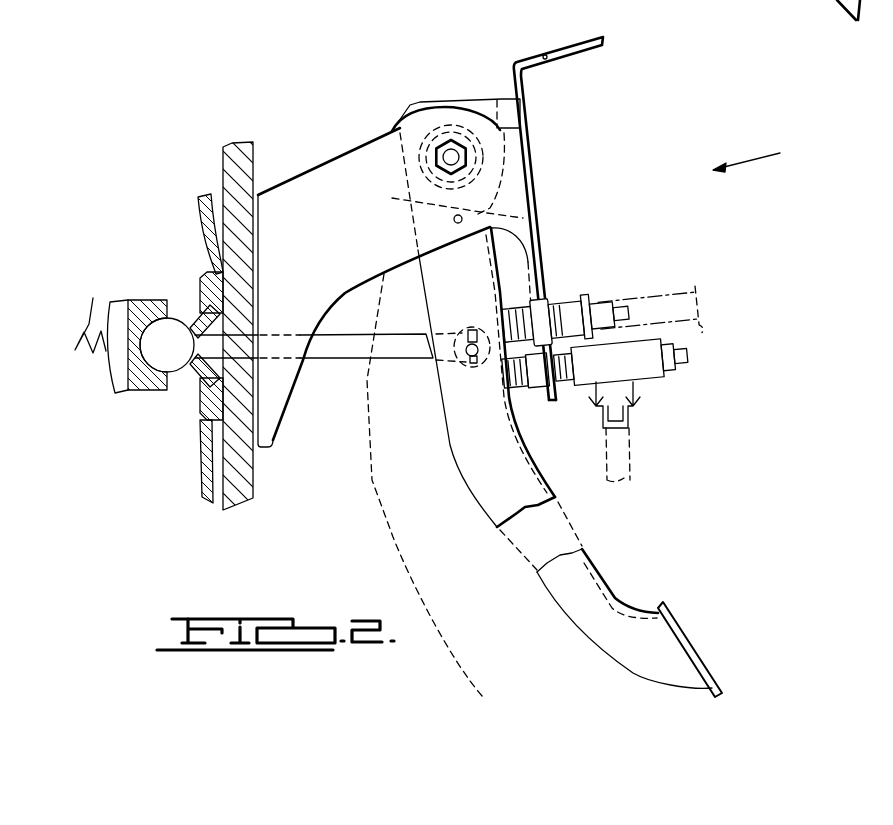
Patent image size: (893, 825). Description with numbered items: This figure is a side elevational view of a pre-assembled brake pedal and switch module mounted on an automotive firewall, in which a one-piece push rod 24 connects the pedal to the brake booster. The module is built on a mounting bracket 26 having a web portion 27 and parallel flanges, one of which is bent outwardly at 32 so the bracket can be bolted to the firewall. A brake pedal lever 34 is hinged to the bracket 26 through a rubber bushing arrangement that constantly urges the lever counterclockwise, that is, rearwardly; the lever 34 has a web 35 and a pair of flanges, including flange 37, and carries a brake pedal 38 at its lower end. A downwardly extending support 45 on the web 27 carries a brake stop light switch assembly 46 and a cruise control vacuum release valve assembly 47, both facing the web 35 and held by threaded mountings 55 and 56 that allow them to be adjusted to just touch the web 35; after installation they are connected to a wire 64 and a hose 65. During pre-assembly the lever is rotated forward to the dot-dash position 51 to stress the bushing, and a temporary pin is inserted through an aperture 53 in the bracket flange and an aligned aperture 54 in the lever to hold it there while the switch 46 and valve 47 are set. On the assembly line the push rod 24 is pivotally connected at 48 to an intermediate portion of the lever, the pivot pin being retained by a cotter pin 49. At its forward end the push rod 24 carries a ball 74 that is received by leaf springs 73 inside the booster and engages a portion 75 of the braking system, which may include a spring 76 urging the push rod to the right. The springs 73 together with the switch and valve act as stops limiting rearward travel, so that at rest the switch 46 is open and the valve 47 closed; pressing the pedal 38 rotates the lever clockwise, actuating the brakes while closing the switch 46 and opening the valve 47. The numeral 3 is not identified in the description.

The pedal assembly 3 is at (752, 158).
The push rod 24 is at (350, 347).
The mounting bracket 26 is at (355, 149).
The web portion 27 is at (535, 170).
The outwardly bent portion of flange 32 is at (254, 217).
The brake pedal lever 34 is at (568, 610).
The web 35 is at (593, 560).
The flange 37 is at (488, 502).
The brake pedal 38 is at (693, 637).
The support 45 is at (540, 310).
The brake stop light switch assembly 46 is at (648, 376).
The cruise control vacuum release valve assembly 47 is at (600, 313).
The pivot connection 48 is at (466, 350).
The cotter pin 49 is at (475, 327).
The forward position of lever 51 is at (377, 500).
The aperture 53 is at (454, 218).
The aperture 54 is at (440, 197).
The threaded mounting 55 is at (569, 380).
The threaded mounting 56 is at (586, 304).
The wire 64 is at (638, 458).
The hose 65 is at (697, 298).
The leaf springs 73 is at (190, 316).
The ball 74 is at (186, 374).
The portion of braking system 75 is at (141, 385).
The spring 76 is at (93, 310).